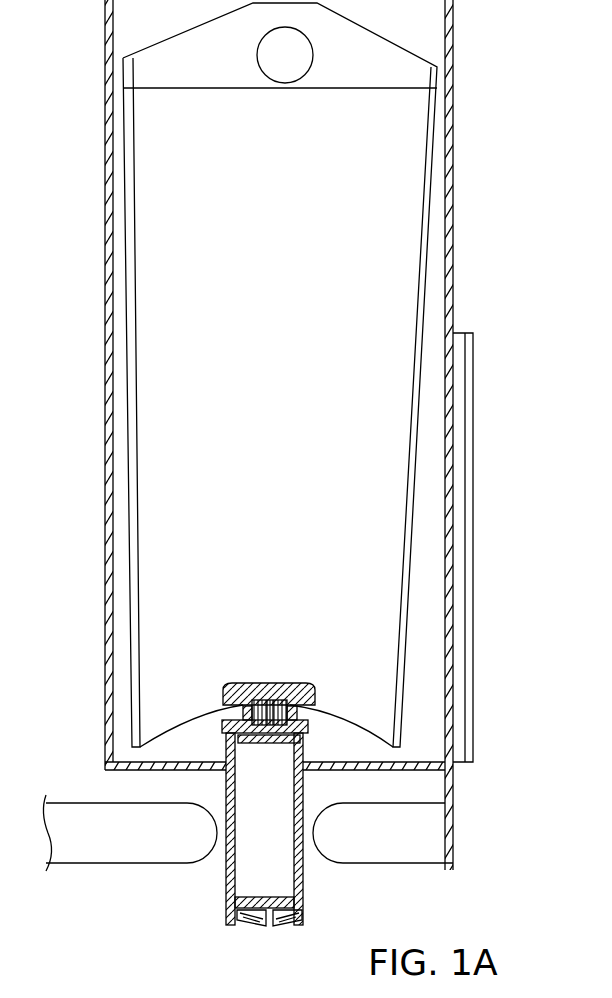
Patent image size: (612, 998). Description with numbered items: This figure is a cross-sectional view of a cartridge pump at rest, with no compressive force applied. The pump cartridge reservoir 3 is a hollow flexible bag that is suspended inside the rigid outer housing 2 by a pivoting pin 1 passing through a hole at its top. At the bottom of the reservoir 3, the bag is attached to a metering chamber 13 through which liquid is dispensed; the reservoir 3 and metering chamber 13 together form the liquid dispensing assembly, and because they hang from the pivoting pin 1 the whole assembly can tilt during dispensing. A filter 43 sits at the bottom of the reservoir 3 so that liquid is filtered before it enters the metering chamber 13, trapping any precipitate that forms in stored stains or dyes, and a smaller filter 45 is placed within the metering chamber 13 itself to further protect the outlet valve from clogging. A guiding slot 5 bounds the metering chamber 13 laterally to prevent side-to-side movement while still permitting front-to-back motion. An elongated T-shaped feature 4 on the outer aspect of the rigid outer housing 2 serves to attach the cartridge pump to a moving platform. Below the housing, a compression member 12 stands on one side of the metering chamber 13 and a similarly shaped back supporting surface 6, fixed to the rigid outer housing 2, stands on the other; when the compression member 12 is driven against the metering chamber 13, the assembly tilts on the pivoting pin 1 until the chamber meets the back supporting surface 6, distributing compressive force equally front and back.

The pivoting pin 1 is at (290, 83).
The rigid outer housing 2 is at (453, 146).
The pump cartridge reservoir 3 is at (428, 210).
The elongated T-shaped feature 4 is at (473, 397).
The guiding slot 5 is at (336, 758).
The back supporting surface 6 is at (413, 803).
The compression member 12 is at (82, 803).
The metering chamber 13 is at (225, 878).
The filter 43 is at (285, 683).
The smaller filter 45 is at (250, 897).